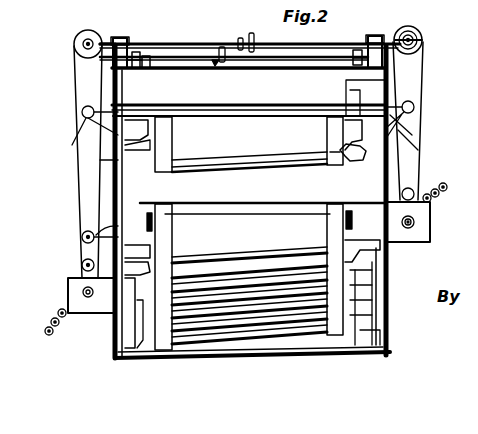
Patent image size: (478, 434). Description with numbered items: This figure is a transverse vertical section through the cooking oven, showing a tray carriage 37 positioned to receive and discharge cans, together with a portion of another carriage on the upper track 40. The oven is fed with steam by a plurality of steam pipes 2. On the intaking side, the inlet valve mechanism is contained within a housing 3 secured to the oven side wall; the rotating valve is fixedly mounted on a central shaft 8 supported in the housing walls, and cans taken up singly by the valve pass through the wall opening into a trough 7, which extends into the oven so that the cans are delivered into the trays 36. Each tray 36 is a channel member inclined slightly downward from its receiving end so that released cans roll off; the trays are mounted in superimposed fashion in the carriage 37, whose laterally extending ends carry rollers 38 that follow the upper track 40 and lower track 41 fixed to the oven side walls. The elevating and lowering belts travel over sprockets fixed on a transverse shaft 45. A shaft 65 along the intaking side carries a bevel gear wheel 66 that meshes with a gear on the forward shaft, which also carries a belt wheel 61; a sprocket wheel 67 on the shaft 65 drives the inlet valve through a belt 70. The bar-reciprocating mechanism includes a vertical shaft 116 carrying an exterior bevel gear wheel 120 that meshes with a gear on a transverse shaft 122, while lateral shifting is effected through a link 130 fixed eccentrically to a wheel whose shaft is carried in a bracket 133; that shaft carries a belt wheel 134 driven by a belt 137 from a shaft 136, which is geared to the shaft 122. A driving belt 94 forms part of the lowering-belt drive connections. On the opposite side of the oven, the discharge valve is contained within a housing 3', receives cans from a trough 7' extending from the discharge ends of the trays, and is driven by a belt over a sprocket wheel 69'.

The steam pipes 2 is at (41, 7).
The driving belt 94 is at (95, 0).
The shaft 136 is at (208, 2).
The transverse shaft 122 is at (245, 36).
The shaft 45 is at (242, 110).
The bevel gear wheel 120 is at (352, 70).
The sprocket wheel 67 is at (418, 30).
The bevel gear wheel 66 is at (424, 38).
The shaft 65 is at (422, 50).
The belt 70 is at (424, 73).
The belt wheel 134 is at (82, 114).
The bracket 133 is at (416, 130).
The belt 137 is at (70, 80).
The belt wheel 61 is at (414, 192).
The central shaft 8 is at (414, 222).
The housing 3 is at (421, 229).
The trough 7 is at (418, 228).
The carriage 37 is at (178, 118).
The rollers 38 is at (172, 150).
The tray 36 is at (282, 162).
The upper track 40 is at (345, 158).
The lower track 41 is at (165, 232).
The link 130 is at (74, 142).
The vertical shaft 116 is at (118, 160).
The sprocket wheel 69' is at (59, 258).
The housing 3' is at (71, 293).
The trough 7' is at (61, 330).